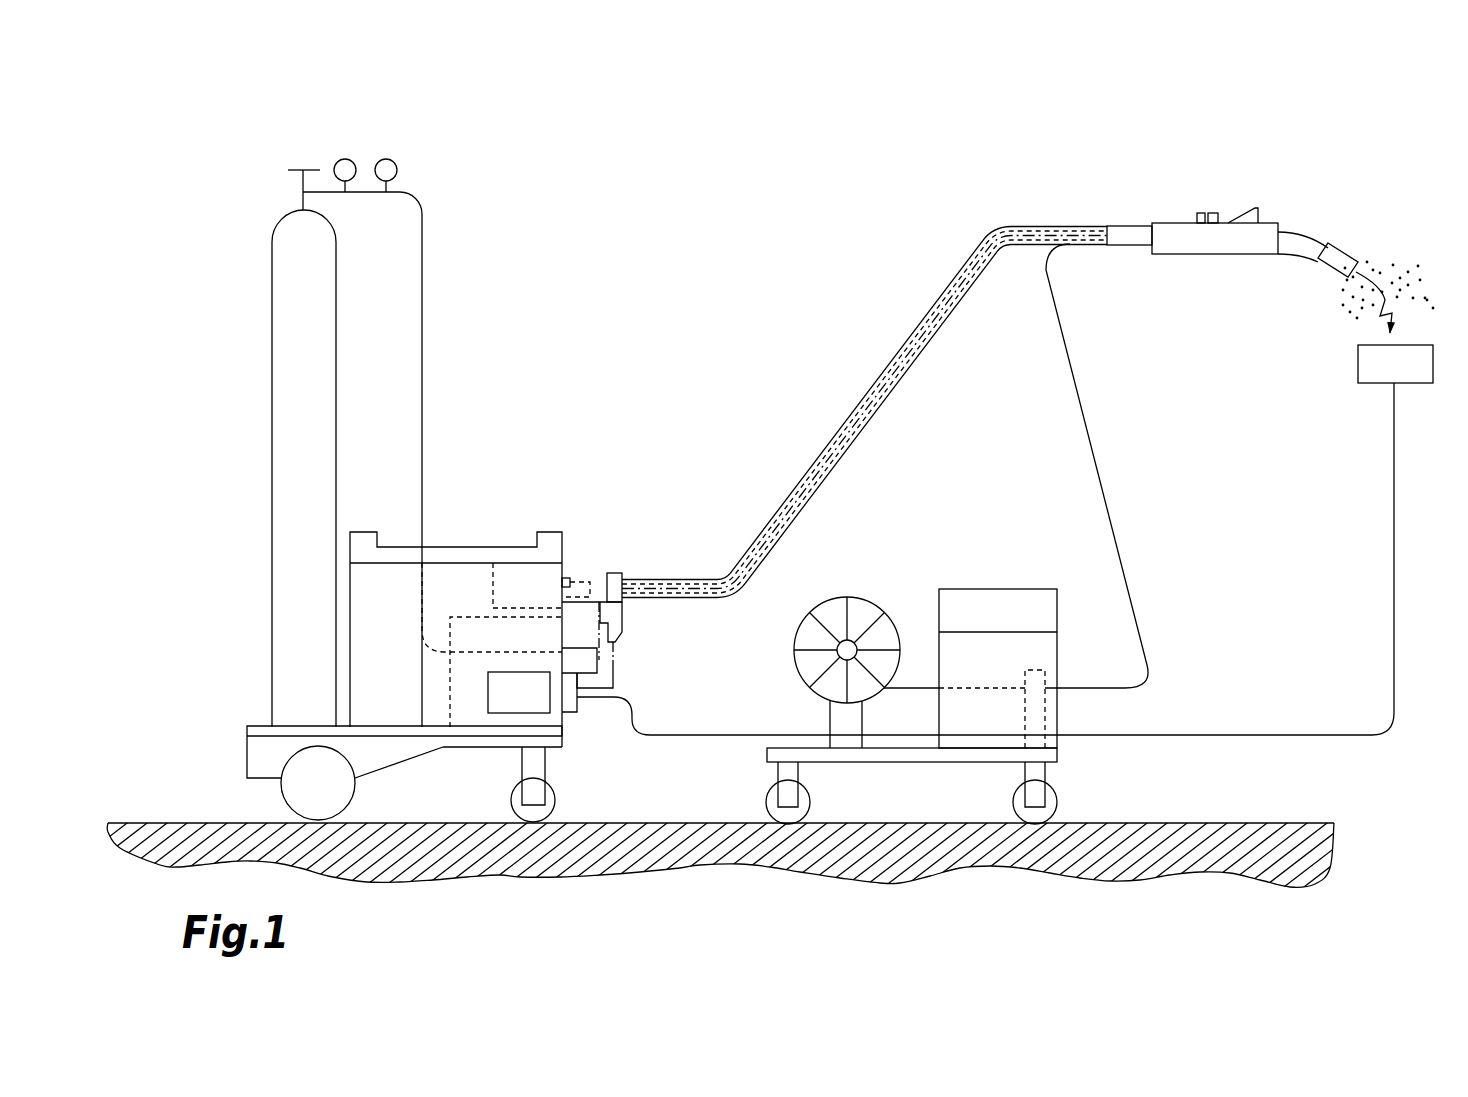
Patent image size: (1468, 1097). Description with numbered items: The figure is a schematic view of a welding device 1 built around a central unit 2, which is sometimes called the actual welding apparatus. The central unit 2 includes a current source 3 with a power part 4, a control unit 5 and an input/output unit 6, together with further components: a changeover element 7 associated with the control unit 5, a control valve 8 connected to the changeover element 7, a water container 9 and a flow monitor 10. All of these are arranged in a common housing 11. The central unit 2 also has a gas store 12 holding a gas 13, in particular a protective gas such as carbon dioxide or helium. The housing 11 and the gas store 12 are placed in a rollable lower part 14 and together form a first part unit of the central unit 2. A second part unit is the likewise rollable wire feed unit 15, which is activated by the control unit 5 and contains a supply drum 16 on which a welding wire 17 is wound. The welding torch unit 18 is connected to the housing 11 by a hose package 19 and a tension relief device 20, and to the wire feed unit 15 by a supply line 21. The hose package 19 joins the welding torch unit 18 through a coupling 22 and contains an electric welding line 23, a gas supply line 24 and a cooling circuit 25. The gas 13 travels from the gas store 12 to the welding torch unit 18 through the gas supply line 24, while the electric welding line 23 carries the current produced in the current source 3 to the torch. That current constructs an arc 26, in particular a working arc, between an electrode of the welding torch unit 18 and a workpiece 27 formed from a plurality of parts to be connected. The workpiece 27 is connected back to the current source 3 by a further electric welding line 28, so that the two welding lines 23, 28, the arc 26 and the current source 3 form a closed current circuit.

The welding device 1 is at (533, 155).
The central unit 2 is at (273, 404).
The current source 3 is at (465, 594).
The power part 4 is at (525, 707).
The control unit 5 is at (450, 690).
The input/output unit 6 is at (557, 580).
The changeover element 7 is at (372, 825).
The control valve 8 is at (573, 667).
The water container 9 is at (517, 578).
The flow monitor 10 is at (571, 579).
The housing 11 is at (617, 615).
The gas store 12 is at (302, 298).
The gas 13 is at (1365, 233).
The rollable lower part 14 is at (273, 752).
The wire feed unit 15 is at (1112, 785).
The supply drum 16 is at (857, 612).
The welding wire 17 is at (967, 690).
The welding torch unit 18 is at (1238, 167).
The hose package 19 is at (864, 411).
The tension relief device 20 is at (618, 582).
The supply line 21 is at (1106, 501).
The coupling 22 is at (1130, 237).
The electric welding line 23 is at (948, 298).
The gas supply line 24 is at (1029, 245).
The cooling circuit 25 is at (790, 500).
The arc 26 is at (1362, 328).
The workpiece 27 is at (1407, 363).
The further electric welding line 28 is at (1395, 584).